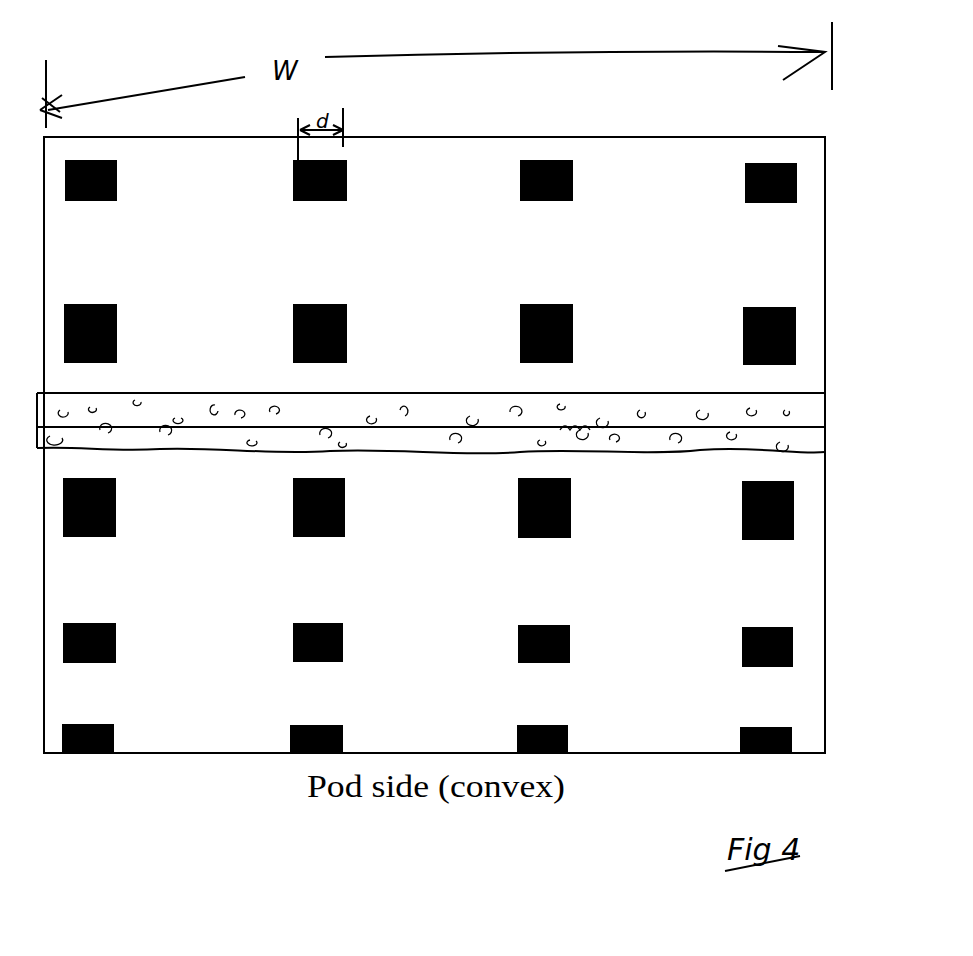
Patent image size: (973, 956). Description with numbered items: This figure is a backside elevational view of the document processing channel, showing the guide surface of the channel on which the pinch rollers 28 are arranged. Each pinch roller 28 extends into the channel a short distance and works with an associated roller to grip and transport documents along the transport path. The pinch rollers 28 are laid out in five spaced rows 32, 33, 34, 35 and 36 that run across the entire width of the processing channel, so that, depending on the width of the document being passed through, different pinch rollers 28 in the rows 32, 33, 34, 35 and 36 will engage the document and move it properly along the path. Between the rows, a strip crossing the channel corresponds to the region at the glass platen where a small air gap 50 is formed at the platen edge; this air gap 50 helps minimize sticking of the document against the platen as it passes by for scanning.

The pinch rollers 28 is at (499, 457).
The spaced row 32 is at (835, 188).
The spaced row 33 is at (820, 337).
The spaced row 34 is at (805, 513).
The spaced row 35 is at (808, 655).
The spaced row 36 is at (810, 737).
The air gap 50 is at (820, 415).